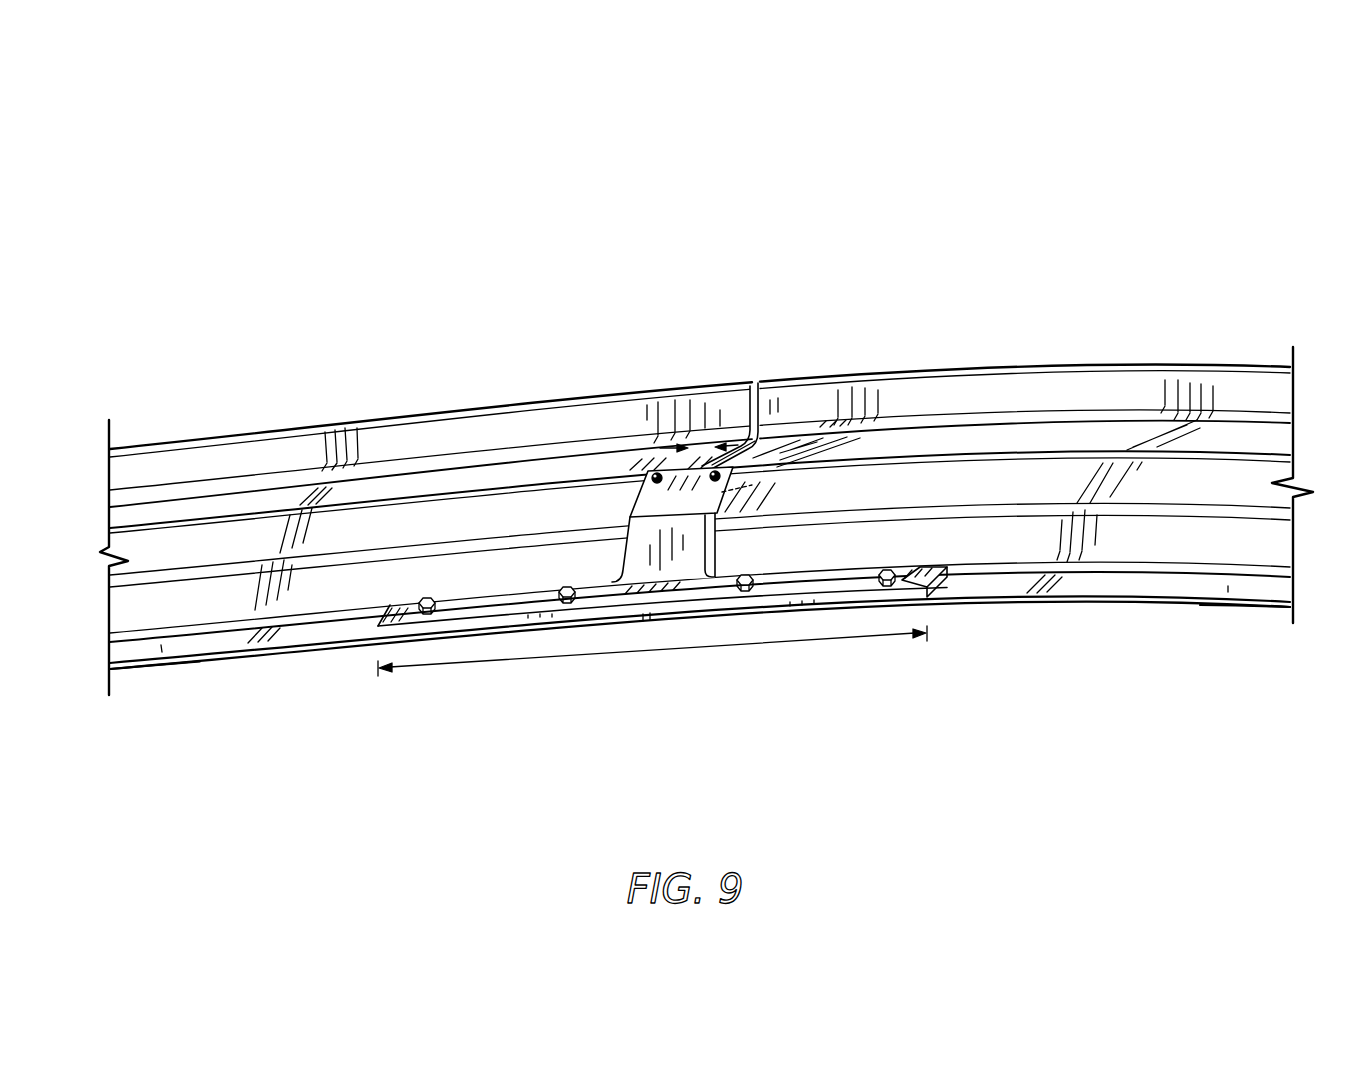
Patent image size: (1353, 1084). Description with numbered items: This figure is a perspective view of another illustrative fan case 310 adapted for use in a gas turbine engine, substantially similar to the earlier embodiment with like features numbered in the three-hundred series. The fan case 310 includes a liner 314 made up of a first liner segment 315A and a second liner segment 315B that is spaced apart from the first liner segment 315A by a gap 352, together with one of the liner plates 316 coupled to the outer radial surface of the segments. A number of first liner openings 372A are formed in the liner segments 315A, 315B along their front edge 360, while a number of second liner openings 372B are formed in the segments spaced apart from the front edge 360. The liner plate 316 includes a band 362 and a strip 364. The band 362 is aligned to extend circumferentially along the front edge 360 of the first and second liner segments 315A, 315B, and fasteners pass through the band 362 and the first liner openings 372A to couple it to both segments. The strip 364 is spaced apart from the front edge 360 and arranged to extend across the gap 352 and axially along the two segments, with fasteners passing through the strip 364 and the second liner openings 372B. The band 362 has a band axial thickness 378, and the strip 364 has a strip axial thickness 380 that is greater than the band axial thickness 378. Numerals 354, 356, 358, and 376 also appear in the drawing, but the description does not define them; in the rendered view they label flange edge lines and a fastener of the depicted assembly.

The fan case 310 is at (710, 443).
The liner 314 is at (706, 512).
The first liner segment 315A is at (617, 382).
The second liner segment 315B is at (1097, 345).
The liner plate 316 is at (681, 636).
The gap 352 is at (761, 372).
The flange 354 is at (316, 634).
The bottom flange 356 is at (160, 655).
The flange edge 358 is at (345, 641).
The front edge 360 is at (234, 644).
The band 362 is at (735, 588).
The strip 364 is at (774, 471).
The first liner openings 372A is at (925, 572).
The second liner openings 372B is at (825, 449).
The fastener 376 is at (566, 583).
The band axial thickness 378 is at (818, 648).
The strip axial thickness 380 is at (701, 442).